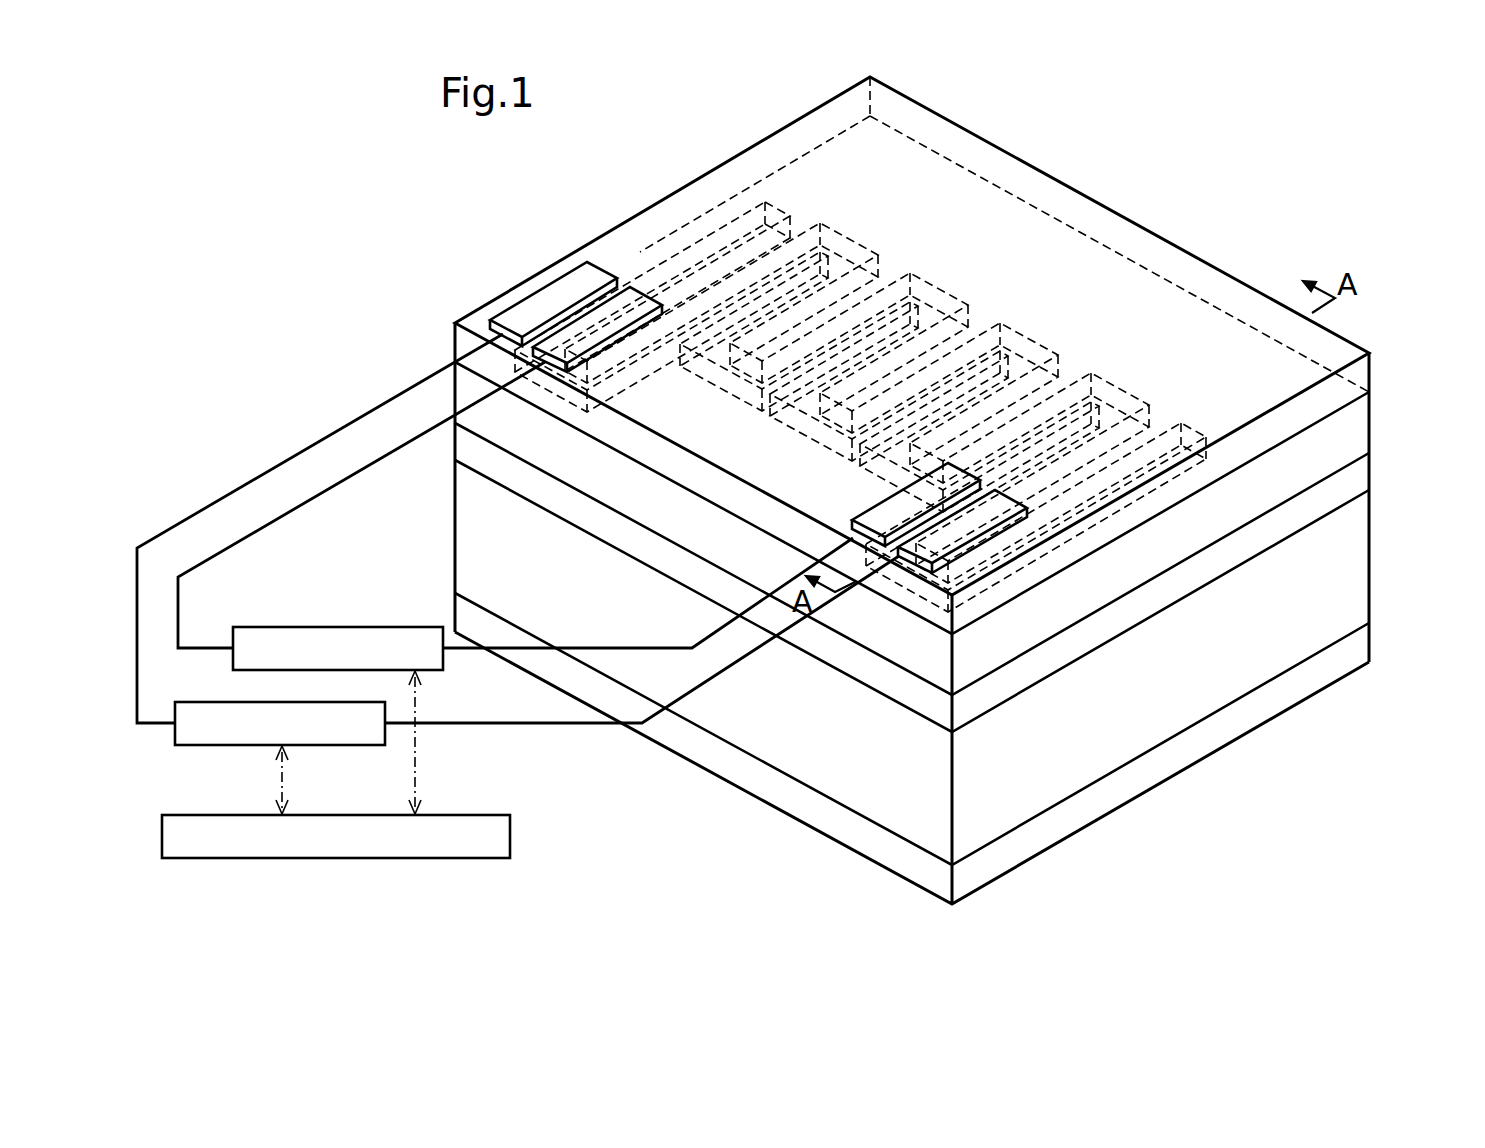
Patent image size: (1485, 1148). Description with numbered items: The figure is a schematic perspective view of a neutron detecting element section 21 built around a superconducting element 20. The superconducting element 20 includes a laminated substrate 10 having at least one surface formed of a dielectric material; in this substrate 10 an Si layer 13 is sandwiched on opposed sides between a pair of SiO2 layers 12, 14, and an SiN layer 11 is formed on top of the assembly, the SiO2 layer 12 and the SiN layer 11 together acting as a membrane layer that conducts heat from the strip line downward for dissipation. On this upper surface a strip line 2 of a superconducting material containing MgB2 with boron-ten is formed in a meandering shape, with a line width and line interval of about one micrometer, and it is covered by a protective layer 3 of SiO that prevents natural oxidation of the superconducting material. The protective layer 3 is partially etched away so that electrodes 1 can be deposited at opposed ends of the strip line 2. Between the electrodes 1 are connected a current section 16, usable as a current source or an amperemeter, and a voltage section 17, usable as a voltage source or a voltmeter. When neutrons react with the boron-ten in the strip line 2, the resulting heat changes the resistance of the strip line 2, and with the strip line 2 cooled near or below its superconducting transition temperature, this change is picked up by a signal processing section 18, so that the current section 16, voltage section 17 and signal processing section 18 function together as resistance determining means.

The electrodes 1 is at (567, 302).
The strip line 2 is at (1118, 382).
The protective layer 3 is at (1362, 370).
The substrate 10 is at (1385, 393).
The SiN layer 11 is at (1240, 502).
The SiO2 layer 12 is at (885, 675).
The Si layer 13 is at (1015, 803).
The SiO2 layer 14 is at (1213, 733).
The current section 16 is at (228, 745).
The voltage section 17 is at (377, 625).
The signal processing section 18 is at (470, 812).
The superconducting element 20 is at (1185, 814).
The neutron detecting element section 21 is at (310, 250).